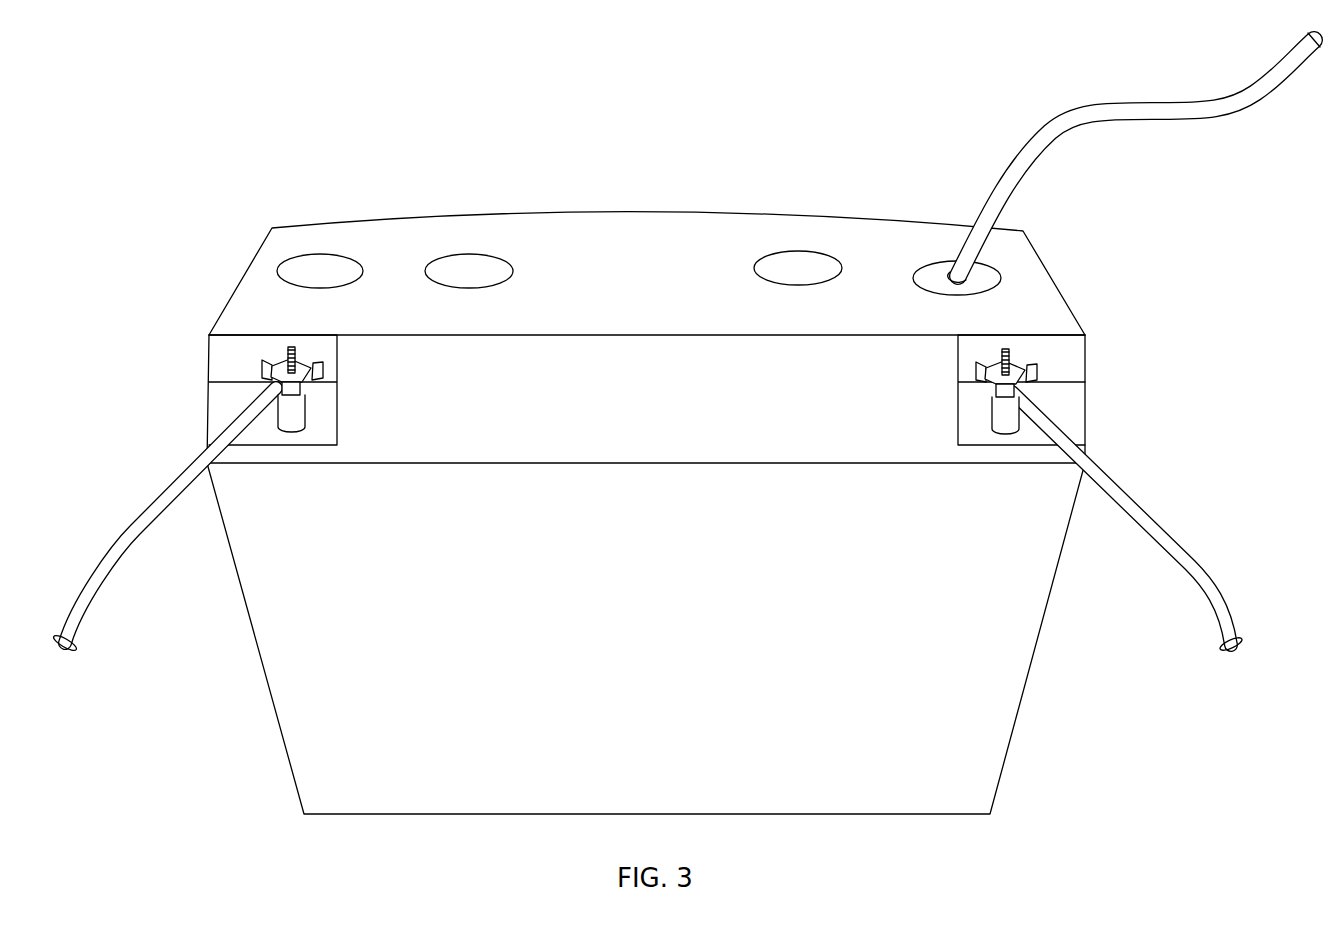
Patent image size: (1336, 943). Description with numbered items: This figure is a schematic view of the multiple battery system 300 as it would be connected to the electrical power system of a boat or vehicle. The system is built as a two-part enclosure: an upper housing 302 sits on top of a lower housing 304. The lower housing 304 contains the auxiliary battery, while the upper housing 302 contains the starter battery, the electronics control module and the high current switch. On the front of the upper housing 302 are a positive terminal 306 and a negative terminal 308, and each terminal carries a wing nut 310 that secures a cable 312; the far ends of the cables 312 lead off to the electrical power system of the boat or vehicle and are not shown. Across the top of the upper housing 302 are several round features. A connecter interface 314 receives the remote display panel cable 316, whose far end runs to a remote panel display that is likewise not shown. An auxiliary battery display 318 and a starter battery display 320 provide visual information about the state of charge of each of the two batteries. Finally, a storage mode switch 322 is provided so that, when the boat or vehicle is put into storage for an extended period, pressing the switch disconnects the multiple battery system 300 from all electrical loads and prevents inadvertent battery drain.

The multiple battery system 300 is at (1120, 248).
The upper housing 302 is at (207, 394).
The lower housing 304 is at (280, 728).
The positive terminal 306 is at (990, 410).
The negative terminal 308 is at (306, 406).
The wing nut 310 is at (320, 366).
The cable 312 is at (108, 544).
The connecter interface 314 is at (921, 262).
The remote display panel cable 316 is at (1149, 97).
The auxiliary battery display 318 is at (453, 254).
The starter battery display 320 is at (306, 254).
The storage mode switch 322 is at (785, 251).